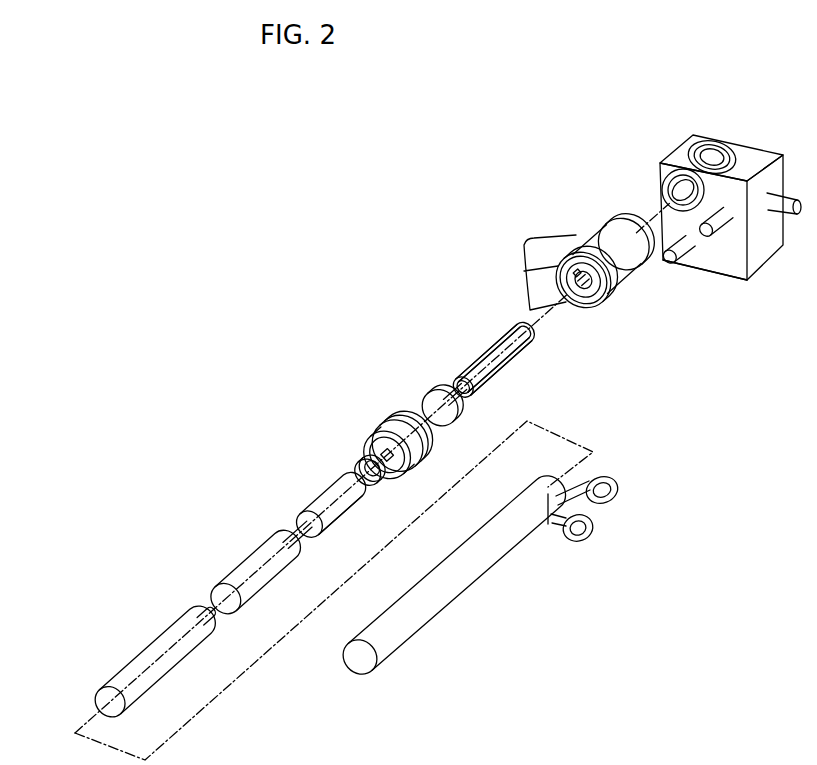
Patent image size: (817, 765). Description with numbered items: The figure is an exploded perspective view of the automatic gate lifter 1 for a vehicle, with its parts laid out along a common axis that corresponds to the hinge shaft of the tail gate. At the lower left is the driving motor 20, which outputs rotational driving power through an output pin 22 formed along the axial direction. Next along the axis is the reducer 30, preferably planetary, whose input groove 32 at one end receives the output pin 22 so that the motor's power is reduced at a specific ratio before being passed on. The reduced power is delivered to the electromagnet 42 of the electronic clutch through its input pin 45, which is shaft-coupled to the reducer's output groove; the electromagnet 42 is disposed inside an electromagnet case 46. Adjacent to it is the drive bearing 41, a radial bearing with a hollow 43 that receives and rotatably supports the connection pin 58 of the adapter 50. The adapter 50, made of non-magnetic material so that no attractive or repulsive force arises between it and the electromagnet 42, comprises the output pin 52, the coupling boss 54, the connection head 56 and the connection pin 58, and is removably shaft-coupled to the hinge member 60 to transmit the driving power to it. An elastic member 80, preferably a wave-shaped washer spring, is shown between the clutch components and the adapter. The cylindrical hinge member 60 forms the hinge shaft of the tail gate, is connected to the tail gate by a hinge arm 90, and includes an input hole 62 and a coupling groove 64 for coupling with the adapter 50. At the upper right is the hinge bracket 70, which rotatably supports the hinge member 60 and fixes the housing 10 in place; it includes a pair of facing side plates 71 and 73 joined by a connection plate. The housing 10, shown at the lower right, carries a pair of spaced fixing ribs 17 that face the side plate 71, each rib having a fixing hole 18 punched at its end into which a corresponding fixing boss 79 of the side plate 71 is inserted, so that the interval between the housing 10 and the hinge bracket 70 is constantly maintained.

The automatic gate lifter 1 is at (169, 353).
The housing 10 is at (466, 588).
The fixing rib 17 is at (548, 530).
The fixing hole 18 is at (596, 532).
The driving motor 20 is at (146, 652).
The output pin 22 is at (205, 612).
The reducer 30 is at (245, 572).
The input groove 32 is at (213, 592).
The drive bearing 41 is at (386, 425).
The electromagnet 42 is at (313, 482).
The hollow 43 is at (391, 472).
The input pin 45 is at (297, 535).
The electromagnet case 46 is at (341, 512).
The adapter 50 is at (484, 327).
The output pin 52 is at (501, 372).
The coupling boss 54 is at (521, 350).
The connection head 56 is at (436, 388).
The connection pin 58 is at (471, 398).
The hinge member 60 is at (622, 286).
The input hole 62 is at (577, 290).
The coupling groove 64 is at (587, 249).
The hinge bracket 70 is at (673, 136).
The side plate 71 is at (731, 270).
The side plate 73 is at (746, 160).
The fixing boss 79 is at (706, 238).
The elastic member 80 is at (364, 458).
The hinge arm 90 is at (546, 250).